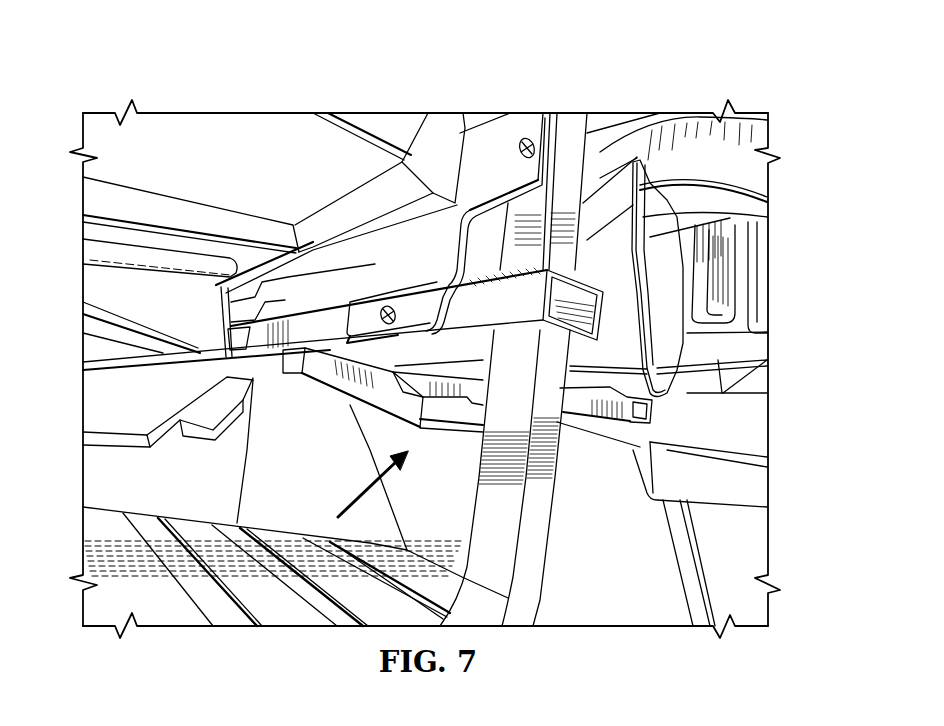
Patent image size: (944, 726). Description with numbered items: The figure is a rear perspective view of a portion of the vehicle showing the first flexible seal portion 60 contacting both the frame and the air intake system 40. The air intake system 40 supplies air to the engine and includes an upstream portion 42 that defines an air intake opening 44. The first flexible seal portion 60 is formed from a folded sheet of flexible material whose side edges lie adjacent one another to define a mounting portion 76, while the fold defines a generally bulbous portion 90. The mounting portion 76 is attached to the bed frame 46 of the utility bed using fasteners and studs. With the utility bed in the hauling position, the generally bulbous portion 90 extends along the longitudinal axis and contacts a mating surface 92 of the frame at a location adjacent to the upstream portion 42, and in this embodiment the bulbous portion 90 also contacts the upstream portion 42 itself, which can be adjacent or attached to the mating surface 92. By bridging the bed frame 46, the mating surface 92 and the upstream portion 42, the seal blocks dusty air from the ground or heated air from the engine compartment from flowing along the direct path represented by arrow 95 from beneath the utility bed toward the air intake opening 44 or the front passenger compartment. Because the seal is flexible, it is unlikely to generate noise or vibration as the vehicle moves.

The air intake system 40 is at (779, 305).
The upstream portion 42 is at (752, 261).
The air intake opening 44 is at (682, 195).
The bed frame 46 is at (582, 130).
The first flexible seal portion 60 is at (657, 167).
The mounting portion 76 is at (617, 190).
The generally bulbous portion 90 is at (664, 372).
The mating surface 92 is at (600, 385).
The arrow 95 is at (350, 500).